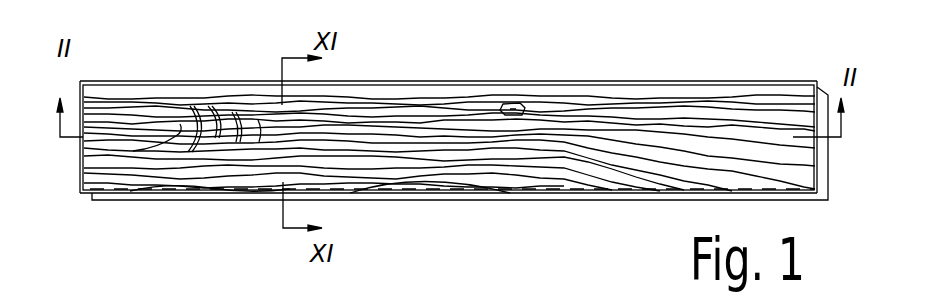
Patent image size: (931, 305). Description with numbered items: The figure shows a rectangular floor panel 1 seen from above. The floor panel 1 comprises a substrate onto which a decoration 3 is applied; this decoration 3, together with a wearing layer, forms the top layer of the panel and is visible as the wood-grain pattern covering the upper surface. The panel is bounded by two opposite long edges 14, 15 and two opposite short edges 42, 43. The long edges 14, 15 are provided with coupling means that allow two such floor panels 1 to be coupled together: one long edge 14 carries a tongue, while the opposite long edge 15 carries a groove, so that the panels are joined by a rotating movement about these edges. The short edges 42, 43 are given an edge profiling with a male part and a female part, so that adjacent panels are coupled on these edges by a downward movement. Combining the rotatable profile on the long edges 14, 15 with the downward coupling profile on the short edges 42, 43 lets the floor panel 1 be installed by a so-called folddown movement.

The floor panel 1 is at (652, 78).
The decoration 3 is at (457, 115).
The long edge 14 is at (416, 80).
The long edge 15 is at (173, 215).
The short edge 42 is at (78, 150).
The short edge 43 is at (833, 162).